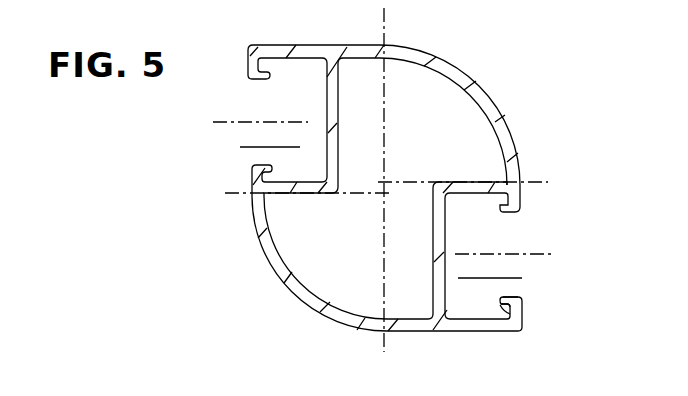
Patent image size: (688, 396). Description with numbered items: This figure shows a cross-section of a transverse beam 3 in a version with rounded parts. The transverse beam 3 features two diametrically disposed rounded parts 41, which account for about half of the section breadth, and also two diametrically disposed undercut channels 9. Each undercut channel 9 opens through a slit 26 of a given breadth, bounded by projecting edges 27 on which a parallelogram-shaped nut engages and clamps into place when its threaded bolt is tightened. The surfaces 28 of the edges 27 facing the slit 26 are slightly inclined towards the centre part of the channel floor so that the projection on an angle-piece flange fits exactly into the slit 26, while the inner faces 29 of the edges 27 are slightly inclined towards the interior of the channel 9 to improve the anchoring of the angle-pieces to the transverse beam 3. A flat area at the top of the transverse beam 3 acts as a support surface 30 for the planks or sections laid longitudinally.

The transverse beam 3 is at (257, 37).
The support surface 30 is at (288, 53).
The rounded parts 41 is at (477, 88).
The slit 26 is at (510, 235).
The projecting edges 27 is at (513, 310).
The surfaces of the edges 28 is at (518, 298).
The inner faces 29 is at (502, 307).
The undercut channel 9 is at (383, 210).